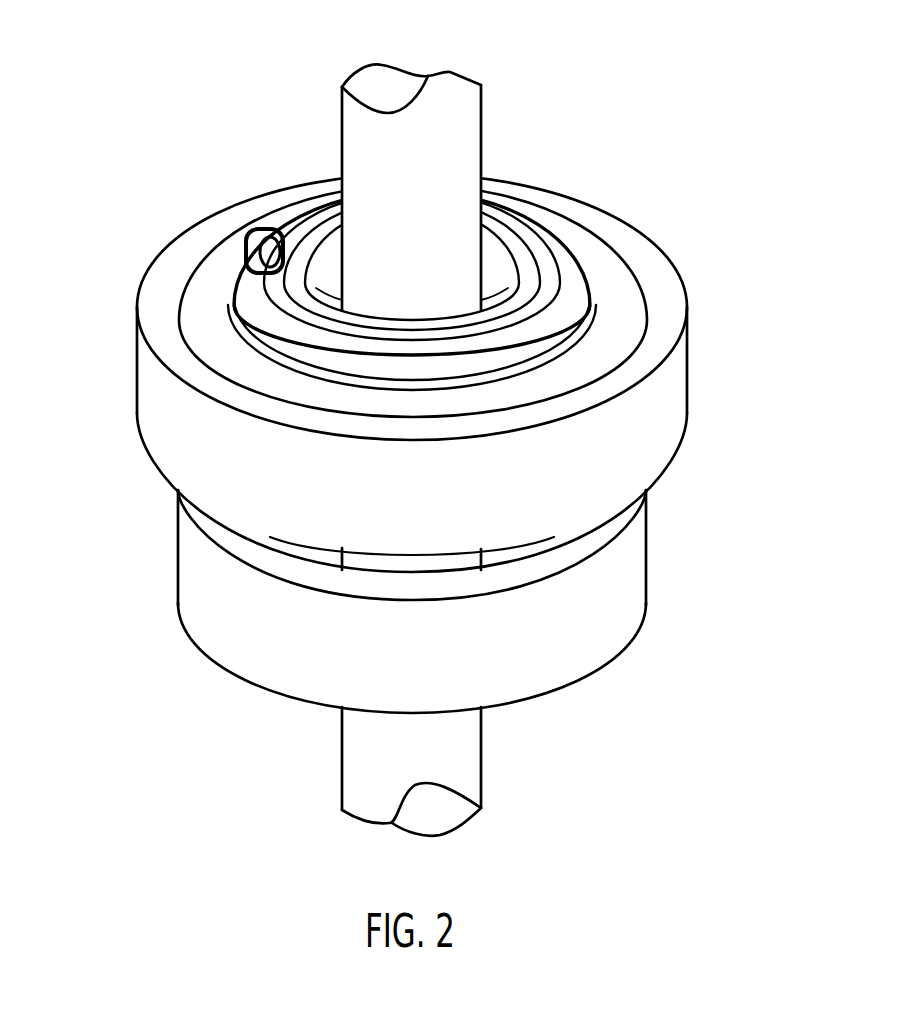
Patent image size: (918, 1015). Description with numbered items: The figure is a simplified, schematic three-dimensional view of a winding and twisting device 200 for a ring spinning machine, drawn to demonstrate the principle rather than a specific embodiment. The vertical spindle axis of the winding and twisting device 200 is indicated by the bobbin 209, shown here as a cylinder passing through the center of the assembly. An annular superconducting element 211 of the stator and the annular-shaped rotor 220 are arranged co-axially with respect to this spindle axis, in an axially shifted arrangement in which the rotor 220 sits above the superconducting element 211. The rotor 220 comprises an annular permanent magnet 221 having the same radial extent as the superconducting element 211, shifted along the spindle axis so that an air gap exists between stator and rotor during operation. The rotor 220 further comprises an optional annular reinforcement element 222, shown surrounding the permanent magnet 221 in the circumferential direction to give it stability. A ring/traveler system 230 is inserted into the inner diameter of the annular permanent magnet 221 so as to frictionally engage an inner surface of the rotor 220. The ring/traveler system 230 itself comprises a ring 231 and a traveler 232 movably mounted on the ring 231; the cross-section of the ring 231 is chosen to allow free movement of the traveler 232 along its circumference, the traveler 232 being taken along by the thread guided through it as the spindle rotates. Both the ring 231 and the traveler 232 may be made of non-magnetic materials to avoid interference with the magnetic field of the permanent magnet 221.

The winding and twisting device 200 is at (688, 41).
The bobbin 209 is at (468, 754).
The annular superconducting element 211 is at (632, 574).
The rotor 220 is at (449, 373).
The annular permanent magnet 221 is at (629, 310).
The annular reinforcement element 222 is at (676, 382).
The ring/traveler system 230 is at (325, 248).
The ring 231 is at (331, 206).
The traveler 232 is at (251, 230).